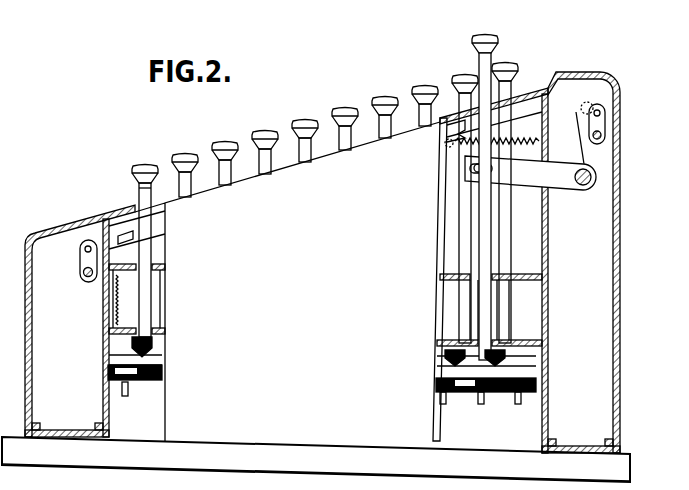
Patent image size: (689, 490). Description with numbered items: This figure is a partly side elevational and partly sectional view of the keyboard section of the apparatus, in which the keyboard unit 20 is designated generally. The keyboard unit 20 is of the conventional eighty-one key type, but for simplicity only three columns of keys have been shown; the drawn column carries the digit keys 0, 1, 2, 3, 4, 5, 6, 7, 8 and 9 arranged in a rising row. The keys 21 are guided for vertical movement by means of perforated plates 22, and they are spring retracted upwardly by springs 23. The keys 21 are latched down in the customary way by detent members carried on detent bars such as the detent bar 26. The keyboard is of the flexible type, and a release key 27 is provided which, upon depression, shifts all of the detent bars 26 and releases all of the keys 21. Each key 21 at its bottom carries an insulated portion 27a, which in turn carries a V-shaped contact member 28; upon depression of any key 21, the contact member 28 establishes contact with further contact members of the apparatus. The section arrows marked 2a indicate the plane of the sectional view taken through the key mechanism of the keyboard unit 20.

The keyboard unit 20 is at (287, 281).
The keys 21 is at (155, 229).
The perforated plates 22 is at (165, 270).
The springs 23 is at (135, 287).
The detent bars 26 is at (98, 240).
The release key 27 is at (495, 47).
The insulated portion 27a is at (506, 352).
The V-shaped contact member 28 is at (506, 366).
The section line 2a is at (78, 318).
The digit key 0 is at (167, 138).
The digit key 1 is at (185, 168).
The digit key 2 is at (225, 156).
The digit key 3 is at (265, 145).
The digit key 4 is at (305, 134).
The digit key 5 is at (345, 122).
The digit key 6 is at (385, 110).
The digit key 7 is at (425, 99).
The digit key 8 is at (465, 202).
The digit key 9 is at (505, 196).